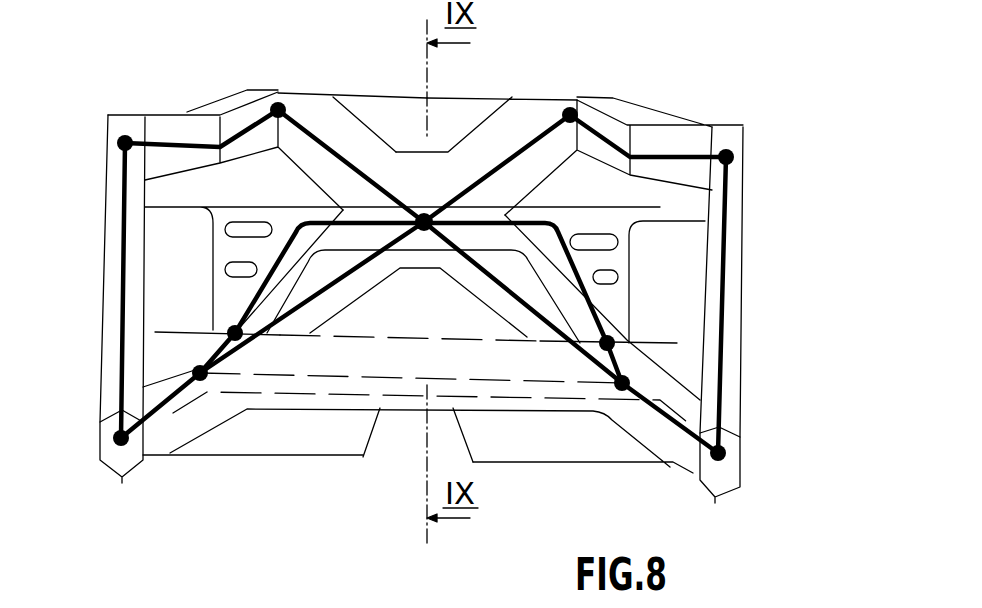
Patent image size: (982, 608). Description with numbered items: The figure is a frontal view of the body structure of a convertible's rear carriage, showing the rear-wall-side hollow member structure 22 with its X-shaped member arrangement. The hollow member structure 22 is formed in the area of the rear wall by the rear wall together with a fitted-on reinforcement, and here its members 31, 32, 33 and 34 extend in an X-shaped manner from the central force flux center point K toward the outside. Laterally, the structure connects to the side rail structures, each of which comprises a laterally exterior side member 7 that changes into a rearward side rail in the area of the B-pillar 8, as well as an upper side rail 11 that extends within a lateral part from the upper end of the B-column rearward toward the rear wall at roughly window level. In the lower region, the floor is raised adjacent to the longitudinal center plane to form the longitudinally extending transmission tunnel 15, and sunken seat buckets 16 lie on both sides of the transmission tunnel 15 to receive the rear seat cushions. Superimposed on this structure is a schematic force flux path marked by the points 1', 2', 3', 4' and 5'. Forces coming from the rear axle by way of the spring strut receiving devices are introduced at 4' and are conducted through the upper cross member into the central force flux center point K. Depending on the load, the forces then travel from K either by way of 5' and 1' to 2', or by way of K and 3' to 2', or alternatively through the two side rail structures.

The force flux path point 1' is at (427, 287).
The force flux path point 2' is at (417, 422).
The force flux path point 3' is at (398, 362).
The force introduction point 4' is at (421, 324).
The force flux path point 5' is at (425, 106).
The laterally exterior side member 7 is at (110, 462).
The B-pillar 8 is at (113, 292).
The upper side rail 11 is at (221, 103).
The transmission tunnel 15 is at (395, 408).
The seat bucket 16 is at (285, 430).
The hollow member structure 22 is at (290, 185).
The member of the hollow member structure 31 is at (343, 133).
The member of the hollow member structure 32 is at (500, 133).
The member of the hollow member structure 33 is at (352, 293).
The member of the hollow member structure 34 is at (528, 295).
The central force flux center point K is at (411, 246).